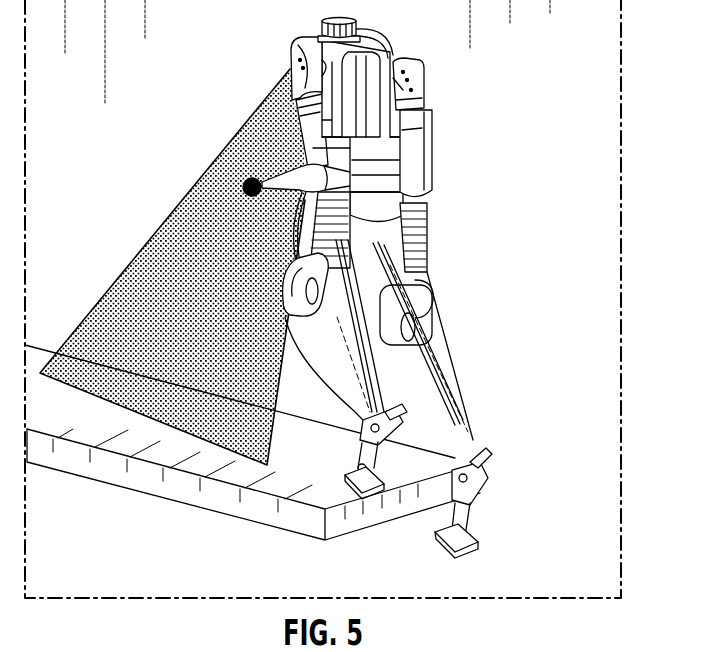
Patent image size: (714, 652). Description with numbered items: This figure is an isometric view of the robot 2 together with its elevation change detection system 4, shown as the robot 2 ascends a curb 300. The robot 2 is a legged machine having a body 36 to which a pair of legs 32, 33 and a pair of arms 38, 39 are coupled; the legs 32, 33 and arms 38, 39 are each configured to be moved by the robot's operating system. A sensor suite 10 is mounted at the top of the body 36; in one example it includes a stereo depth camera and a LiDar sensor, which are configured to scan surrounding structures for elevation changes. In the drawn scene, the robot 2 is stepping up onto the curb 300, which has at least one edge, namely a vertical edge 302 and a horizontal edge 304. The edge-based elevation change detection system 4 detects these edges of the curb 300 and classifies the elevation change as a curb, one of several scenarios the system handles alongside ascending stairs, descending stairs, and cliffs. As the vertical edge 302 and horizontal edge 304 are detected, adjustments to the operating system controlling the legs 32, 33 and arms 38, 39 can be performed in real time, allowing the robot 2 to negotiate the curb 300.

The robot 2 is at (238, 44).
The elevation change detection system 4 is at (291, 40).
The sensor suite 10 is at (357, 28).
The arm 39 is at (315, 148).
The body 36 is at (380, 140).
The arm 38 is at (437, 178).
The leg 32 is at (355, 375).
The leg 33 is at (437, 423).
The curb 300 is at (46, 326).
The vertical edge 302 is at (323, 533).
The horizontal edge 304 is at (347, 505).